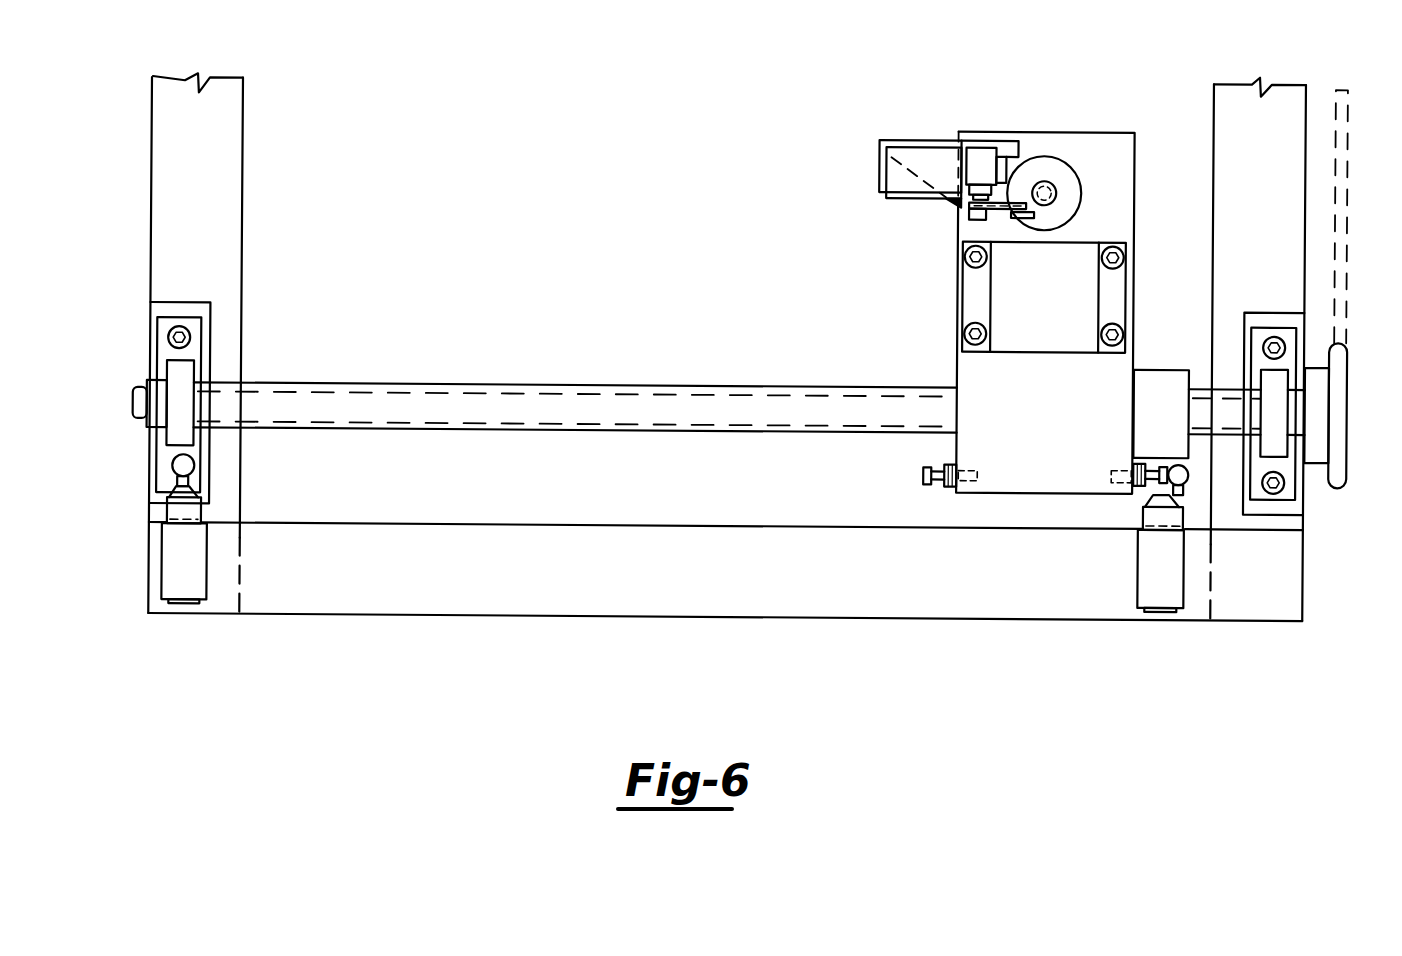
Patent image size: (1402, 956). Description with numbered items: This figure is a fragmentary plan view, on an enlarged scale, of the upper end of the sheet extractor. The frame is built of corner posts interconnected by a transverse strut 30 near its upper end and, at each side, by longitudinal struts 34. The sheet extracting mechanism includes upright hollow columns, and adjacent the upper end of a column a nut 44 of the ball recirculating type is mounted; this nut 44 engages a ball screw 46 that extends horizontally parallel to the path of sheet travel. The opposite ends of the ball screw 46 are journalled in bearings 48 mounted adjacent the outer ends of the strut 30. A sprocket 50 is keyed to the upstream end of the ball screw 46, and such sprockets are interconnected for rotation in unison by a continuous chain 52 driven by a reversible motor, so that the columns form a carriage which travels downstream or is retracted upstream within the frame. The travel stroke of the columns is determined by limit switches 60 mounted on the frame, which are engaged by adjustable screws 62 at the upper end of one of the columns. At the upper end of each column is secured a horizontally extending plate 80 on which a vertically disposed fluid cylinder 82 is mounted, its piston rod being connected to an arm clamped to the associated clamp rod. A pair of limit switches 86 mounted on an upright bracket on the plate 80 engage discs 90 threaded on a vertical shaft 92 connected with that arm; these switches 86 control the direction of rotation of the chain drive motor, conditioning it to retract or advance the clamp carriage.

The transverse strut 30 is at (1300, 82).
The longitudinal strut 34 is at (843, 603).
The nut 44 is at (1160, 365).
The ball screw 46 is at (834, 380).
The bearing 48 is at (193, 322).
The sprocket 50 is at (1340, 374).
The chain 52 is at (1340, 250).
The limit switch 60 is at (192, 510).
The adjustable screw 62 is at (925, 477).
The plate 80 is at (1118, 191).
The fluid cylinder 82 is at (1028, 337).
The limit switch 86 is at (985, 156).
The disc 90 is at (1070, 176).
The vertical shaft 92 is at (1047, 179).